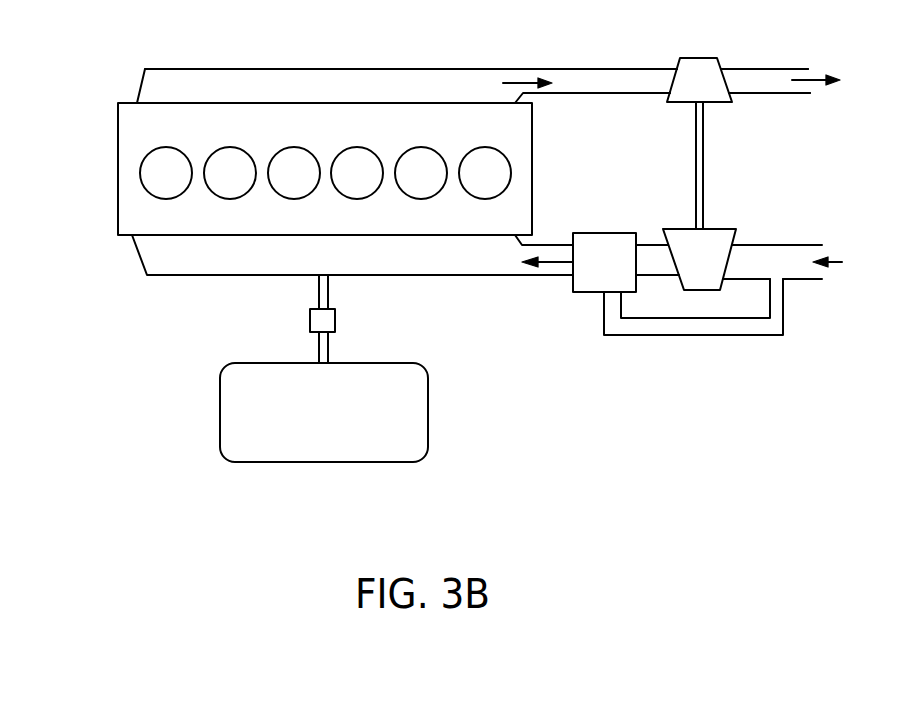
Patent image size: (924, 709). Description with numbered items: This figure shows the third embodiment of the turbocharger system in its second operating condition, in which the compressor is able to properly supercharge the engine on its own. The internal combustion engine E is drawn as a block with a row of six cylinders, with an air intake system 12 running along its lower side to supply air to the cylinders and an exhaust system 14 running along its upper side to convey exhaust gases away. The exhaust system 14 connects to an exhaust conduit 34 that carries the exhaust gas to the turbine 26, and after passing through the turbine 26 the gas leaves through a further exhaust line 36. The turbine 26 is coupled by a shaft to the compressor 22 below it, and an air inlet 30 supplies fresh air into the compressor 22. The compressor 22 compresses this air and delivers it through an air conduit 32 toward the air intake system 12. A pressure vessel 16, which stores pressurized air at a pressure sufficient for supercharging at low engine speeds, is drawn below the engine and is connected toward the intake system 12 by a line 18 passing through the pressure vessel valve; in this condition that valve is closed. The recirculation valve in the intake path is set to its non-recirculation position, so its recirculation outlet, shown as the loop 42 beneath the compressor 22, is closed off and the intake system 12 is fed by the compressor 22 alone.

The internal combustion engine E is at (128, 173).
The air intake system 12 is at (158, 262).
The exhaust system 14 is at (153, 88).
The pressure vessel 16 is at (248, 418).
The fuel line 18 is at (320, 355).
The compressor 22 is at (712, 240).
The turbine 26 is at (694, 70).
The air inlet 30 is at (798, 268).
The air conduit 32 is at (648, 253).
The exhaust conduit 34 is at (597, 80).
The further exhaust line 36 is at (763, 77).
The recirculation conduit 42 is at (694, 325).